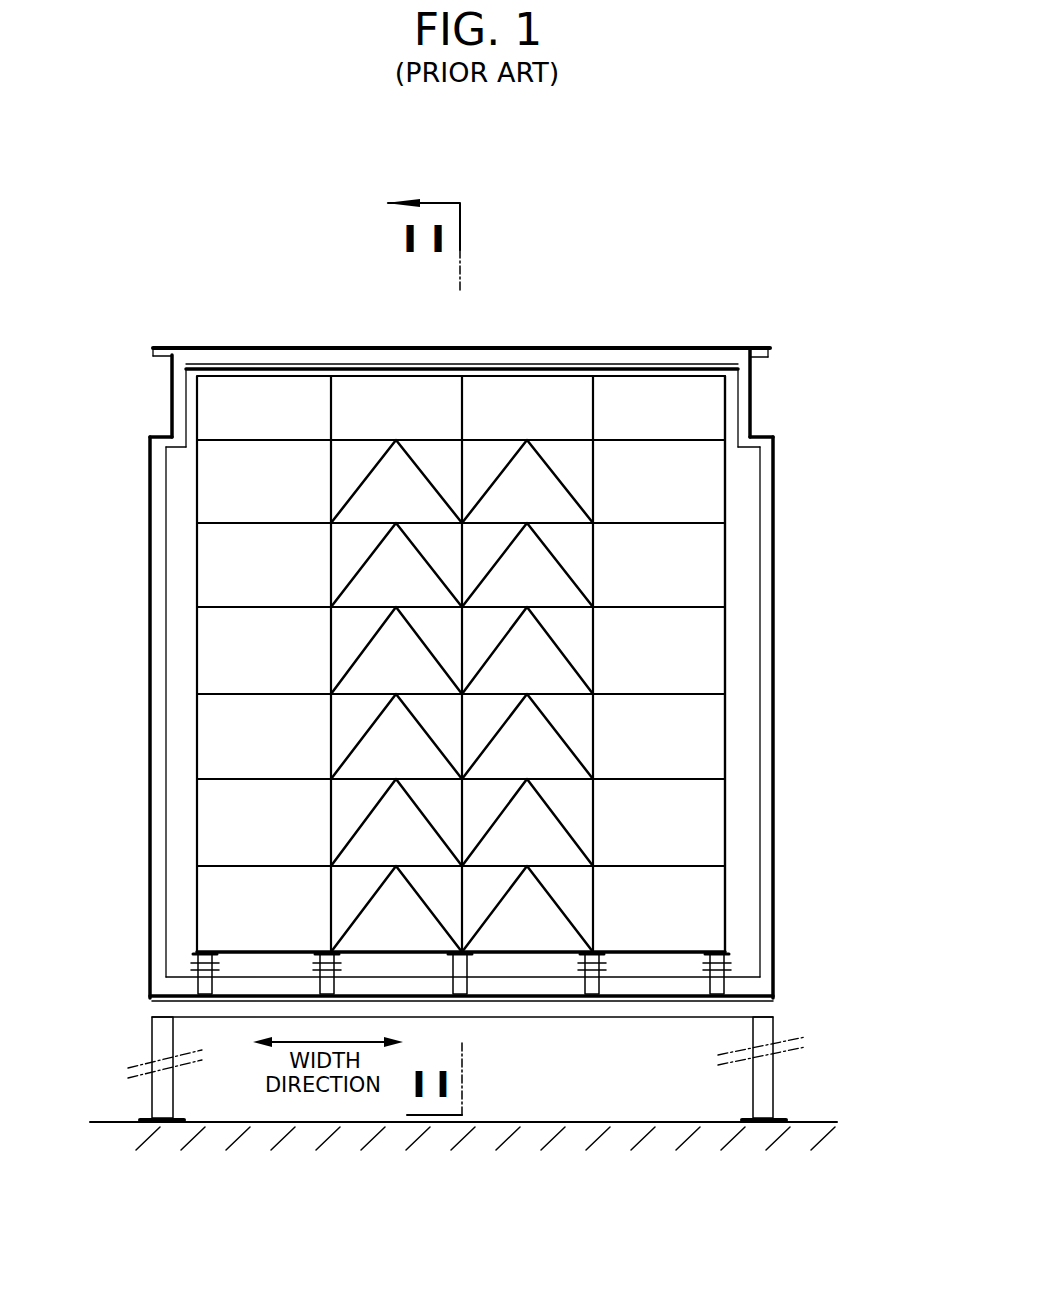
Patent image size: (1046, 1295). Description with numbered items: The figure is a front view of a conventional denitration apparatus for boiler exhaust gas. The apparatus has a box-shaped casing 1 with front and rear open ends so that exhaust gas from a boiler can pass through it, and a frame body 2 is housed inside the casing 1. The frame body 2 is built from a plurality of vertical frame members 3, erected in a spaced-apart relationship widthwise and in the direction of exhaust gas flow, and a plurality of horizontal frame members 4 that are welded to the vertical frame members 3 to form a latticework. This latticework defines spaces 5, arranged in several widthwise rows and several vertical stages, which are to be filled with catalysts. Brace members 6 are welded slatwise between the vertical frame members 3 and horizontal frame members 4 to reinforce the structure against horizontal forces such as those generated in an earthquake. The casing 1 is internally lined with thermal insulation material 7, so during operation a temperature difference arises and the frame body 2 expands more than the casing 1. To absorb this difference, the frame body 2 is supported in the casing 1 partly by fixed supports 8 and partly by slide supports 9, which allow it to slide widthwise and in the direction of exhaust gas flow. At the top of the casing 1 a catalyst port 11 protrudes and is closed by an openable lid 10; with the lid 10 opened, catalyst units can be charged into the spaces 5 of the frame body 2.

The casing 1 is at (792, 504).
The frame body 2 is at (738, 579).
The vertical frame members 3 is at (730, 670).
The horizontal frame members 4 is at (680, 694).
The spaces 5 is at (658, 822).
The brace members 6 is at (360, 487).
The thermal insulation material 7 is at (156, 848).
The fixed supports 8 is at (476, 958).
The slide supports 9 is at (603, 962).
The lid 10 is at (663, 347).
The catalyst port 11 is at (752, 405).